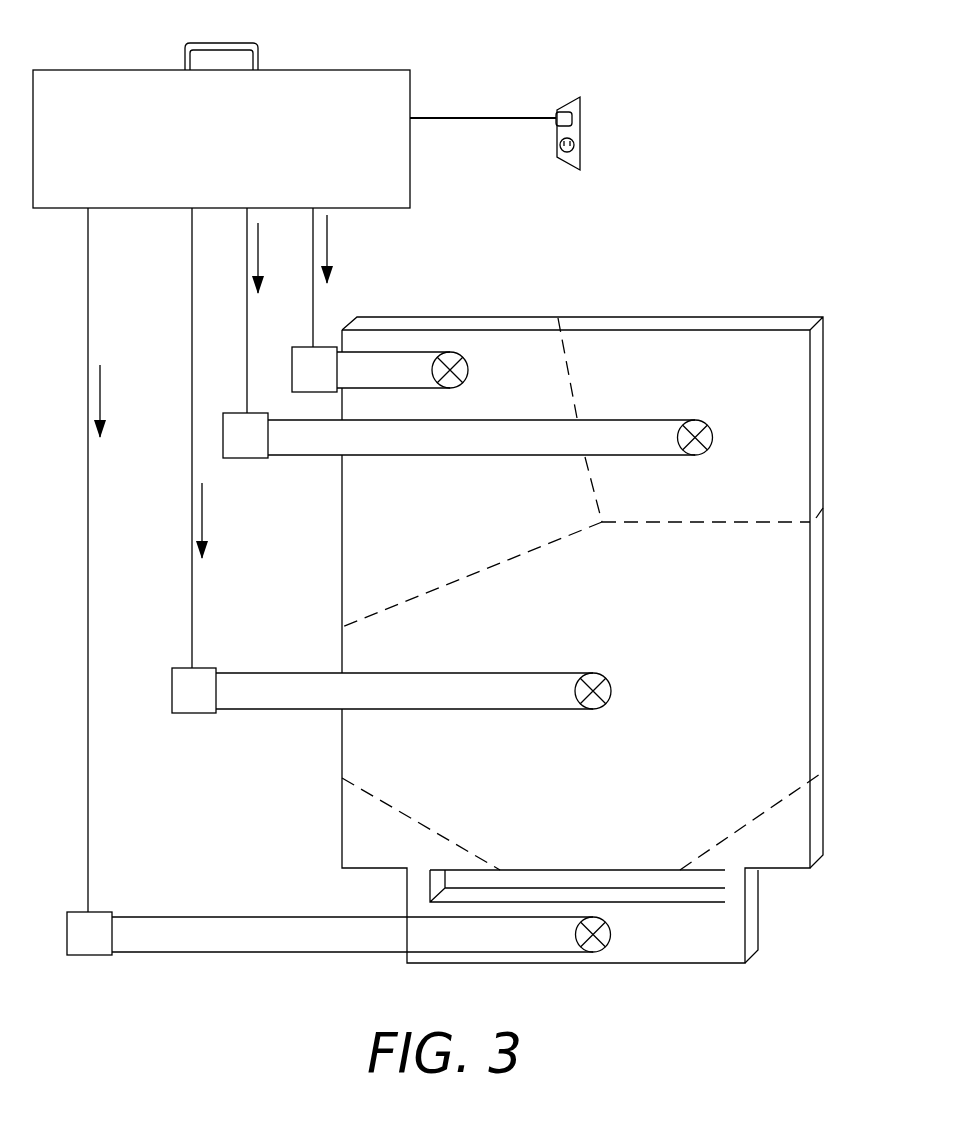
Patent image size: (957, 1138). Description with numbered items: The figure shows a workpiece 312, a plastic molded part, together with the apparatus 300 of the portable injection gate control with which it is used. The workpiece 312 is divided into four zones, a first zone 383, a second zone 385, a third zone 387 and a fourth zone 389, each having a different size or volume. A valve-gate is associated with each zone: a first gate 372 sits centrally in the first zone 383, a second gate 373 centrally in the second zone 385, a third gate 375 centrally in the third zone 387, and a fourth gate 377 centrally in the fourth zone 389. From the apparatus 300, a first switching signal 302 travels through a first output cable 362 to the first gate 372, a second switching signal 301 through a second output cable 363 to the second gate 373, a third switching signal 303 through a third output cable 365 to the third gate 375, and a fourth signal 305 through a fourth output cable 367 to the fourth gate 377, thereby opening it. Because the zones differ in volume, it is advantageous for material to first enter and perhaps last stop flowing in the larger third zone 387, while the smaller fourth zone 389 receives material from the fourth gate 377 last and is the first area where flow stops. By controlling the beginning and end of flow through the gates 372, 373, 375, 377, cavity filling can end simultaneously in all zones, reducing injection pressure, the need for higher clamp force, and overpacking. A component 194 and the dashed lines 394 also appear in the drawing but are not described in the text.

The apparatus 300 is at (334, 47).
The workpiece 312 is at (774, 299).
The second switching signal 301 is at (258, 238).
The first switching signal 302 is at (327, 236).
The third switching signal 303 is at (202, 501).
The fourth signal 305 is at (100, 383).
The first output cable 362 is at (313, 312).
The second output cable 363 is at (247, 395).
The third output cable 365 is at (192, 302).
The fourth output cable 367 is at (88, 302).
The first gate 372 is at (465, 360).
The second gate 373 is at (711, 434).
The third gate 375 is at (608, 684).
The fourth gate 377 is at (611, 931).
The valve 194 is at (172, 669).
The first zone 383 is at (465, 504).
The second zone 385 is at (738, 386).
The third zone 387 is at (752, 621).
The fourth zone 389 is at (730, 951).
The partition 394 is at (581, 406).